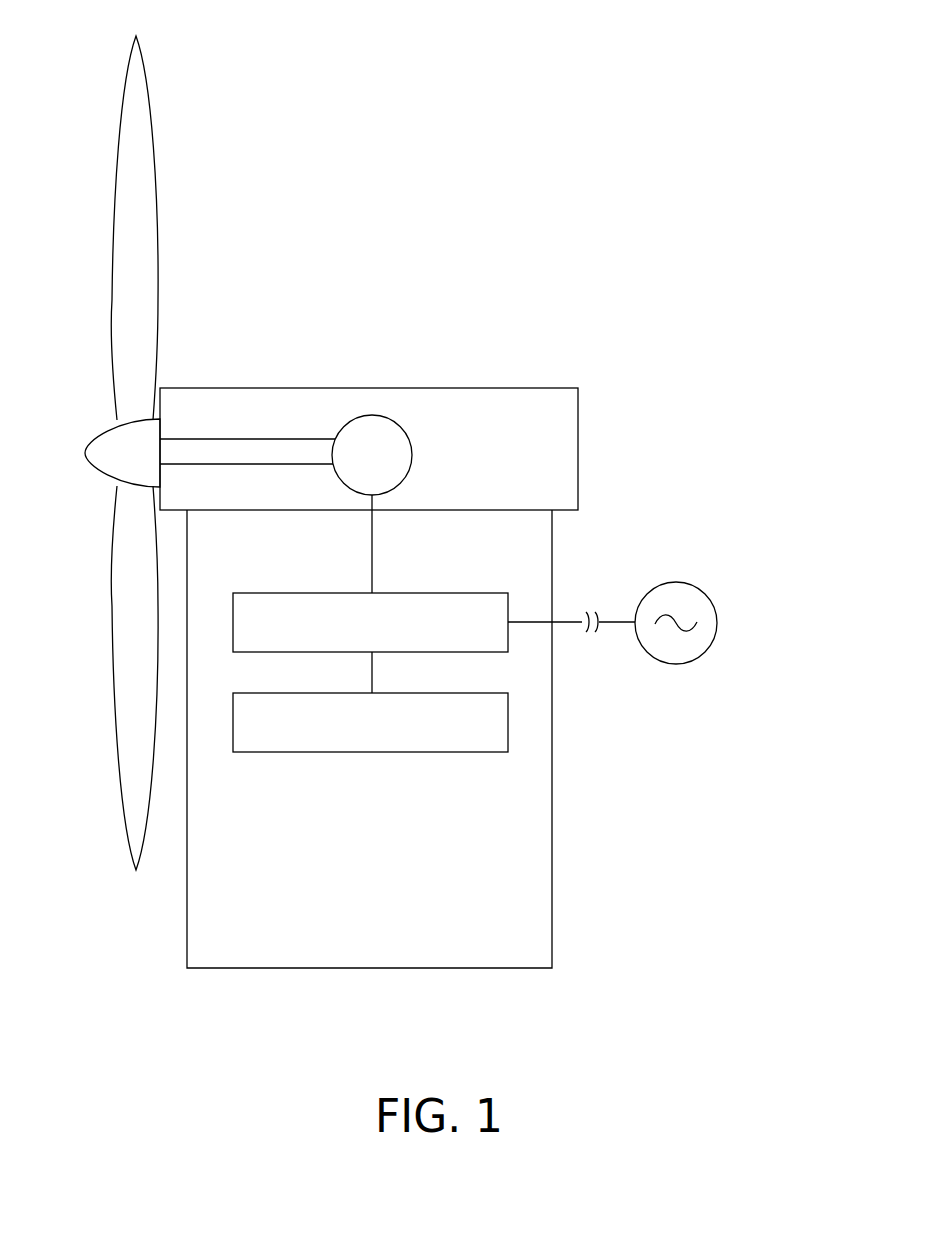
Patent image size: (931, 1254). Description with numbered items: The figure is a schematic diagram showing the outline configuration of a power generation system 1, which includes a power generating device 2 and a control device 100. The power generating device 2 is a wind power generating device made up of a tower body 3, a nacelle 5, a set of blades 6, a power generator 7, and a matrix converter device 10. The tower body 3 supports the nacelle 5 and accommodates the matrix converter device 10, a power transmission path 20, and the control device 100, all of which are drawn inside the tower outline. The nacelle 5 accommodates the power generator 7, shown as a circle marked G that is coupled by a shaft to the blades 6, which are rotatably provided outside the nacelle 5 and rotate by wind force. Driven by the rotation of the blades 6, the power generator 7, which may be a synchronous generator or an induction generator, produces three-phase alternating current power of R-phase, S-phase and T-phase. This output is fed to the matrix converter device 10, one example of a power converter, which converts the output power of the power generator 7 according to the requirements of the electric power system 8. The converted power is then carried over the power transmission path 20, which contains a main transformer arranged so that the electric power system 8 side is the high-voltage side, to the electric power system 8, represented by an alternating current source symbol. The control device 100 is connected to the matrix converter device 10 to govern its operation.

The power generation system 1 is at (462, 203).
The power generating device 2 is at (731, 245).
The tower body 3 is at (552, 568).
The nacelle 5 is at (503, 388).
The blades 6 is at (146, 250).
The power generator 7 is at (400, 424).
The electric power system 8 is at (717, 623).
The matrix converter device 10 is at (467, 593).
The power transmission path 20 is at (612, 622).
The control device 100 is at (508, 718).